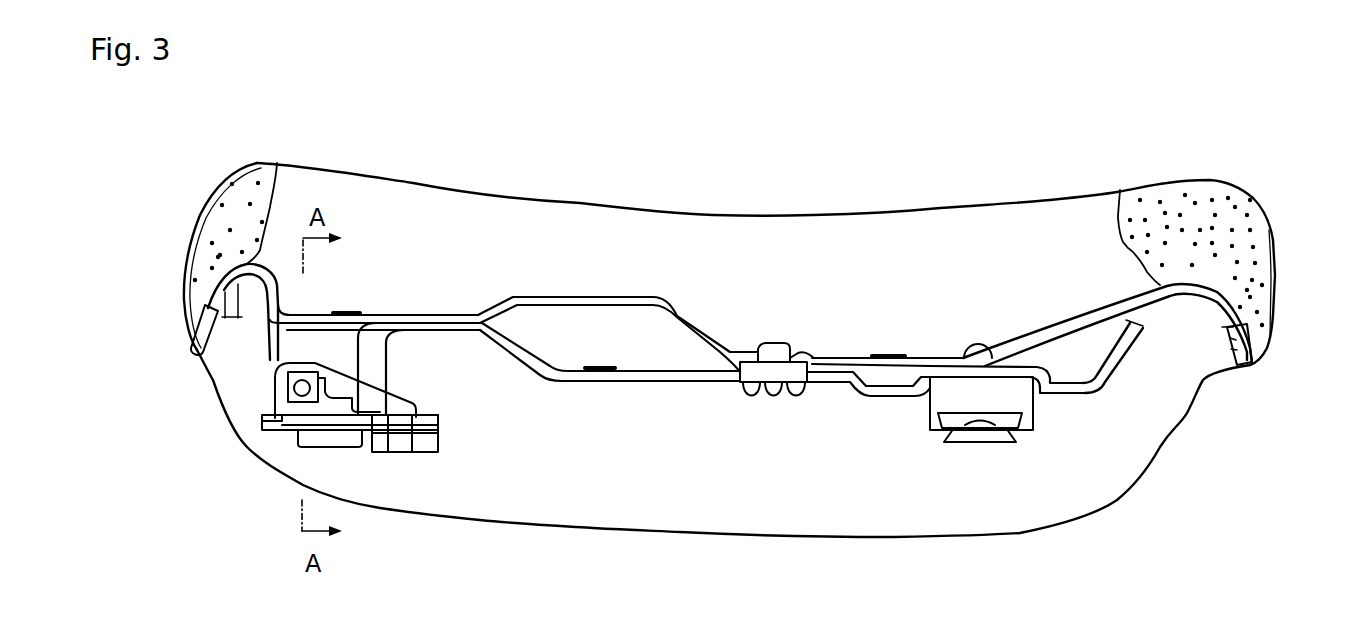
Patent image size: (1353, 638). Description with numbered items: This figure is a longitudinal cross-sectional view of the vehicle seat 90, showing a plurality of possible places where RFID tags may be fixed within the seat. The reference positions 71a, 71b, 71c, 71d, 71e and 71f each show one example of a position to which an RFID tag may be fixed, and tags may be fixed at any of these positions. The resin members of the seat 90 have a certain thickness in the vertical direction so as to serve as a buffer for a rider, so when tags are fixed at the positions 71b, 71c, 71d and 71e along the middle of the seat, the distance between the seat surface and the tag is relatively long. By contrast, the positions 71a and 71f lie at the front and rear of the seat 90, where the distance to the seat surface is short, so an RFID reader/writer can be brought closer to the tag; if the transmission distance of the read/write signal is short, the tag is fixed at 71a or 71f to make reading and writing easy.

The seat 90 is at (150, 240).
The RFID tag fixing position 71a is at (180, 328).
The RFID tag fixing position 71b is at (302, 290).
The RFID tag fixing position 71c is at (347, 304).
The RFID tag fixing position 71d is at (598, 360).
The RFID tag fixing position 71e is at (888, 343).
The RFID tag fixing position 71f is at (1270, 333).